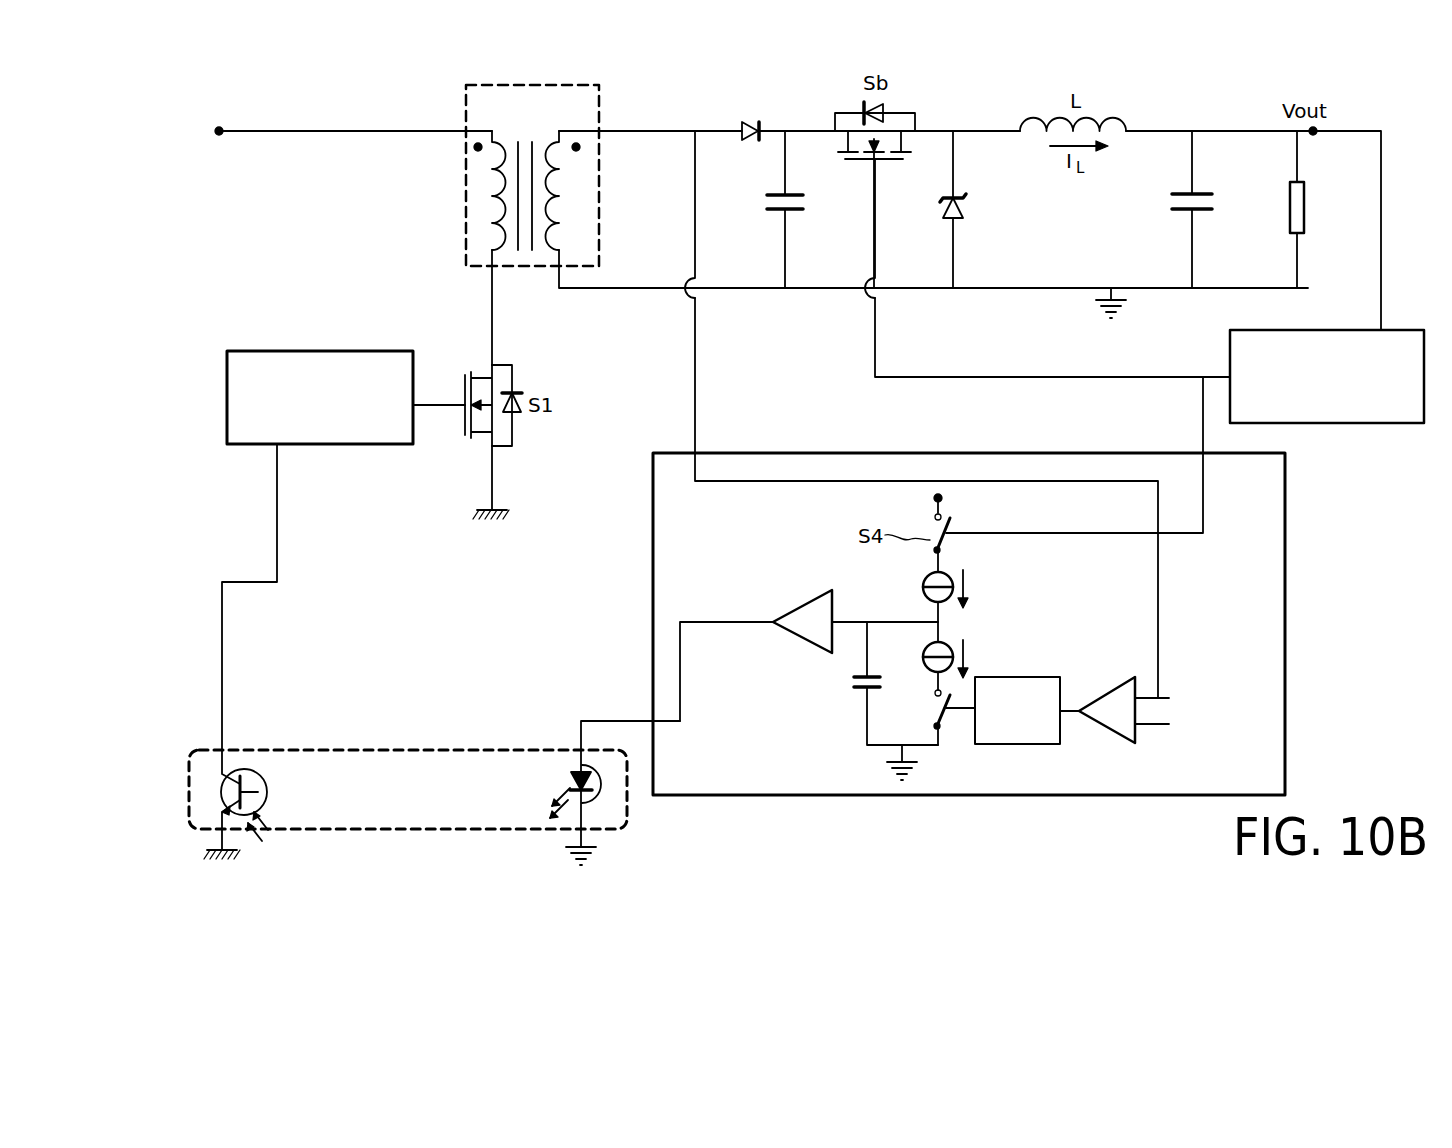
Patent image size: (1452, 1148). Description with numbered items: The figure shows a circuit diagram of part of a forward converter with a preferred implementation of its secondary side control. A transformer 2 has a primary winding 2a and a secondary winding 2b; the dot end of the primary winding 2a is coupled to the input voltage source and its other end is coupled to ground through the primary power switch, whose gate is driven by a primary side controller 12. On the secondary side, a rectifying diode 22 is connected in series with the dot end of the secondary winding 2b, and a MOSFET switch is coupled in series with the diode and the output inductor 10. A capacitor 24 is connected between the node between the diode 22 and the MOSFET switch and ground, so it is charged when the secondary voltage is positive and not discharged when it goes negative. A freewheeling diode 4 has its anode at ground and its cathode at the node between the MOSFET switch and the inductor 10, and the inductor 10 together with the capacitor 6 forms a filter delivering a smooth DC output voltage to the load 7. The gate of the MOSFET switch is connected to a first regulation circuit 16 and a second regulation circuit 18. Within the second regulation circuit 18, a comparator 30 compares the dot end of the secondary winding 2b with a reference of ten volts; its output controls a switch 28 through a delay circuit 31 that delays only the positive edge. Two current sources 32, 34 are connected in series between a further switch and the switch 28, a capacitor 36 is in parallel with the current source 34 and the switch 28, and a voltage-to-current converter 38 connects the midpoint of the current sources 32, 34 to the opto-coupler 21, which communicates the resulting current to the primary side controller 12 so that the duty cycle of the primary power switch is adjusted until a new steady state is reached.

The output inductor 10 is at (262, 135).
The transformer 2 is at (524, 217).
The primary winding 2a is at (505, 267).
The secondary winding 2b is at (547, 267).
The primary side controller 12 is at (341, 351).
The rectifying diode 22 is at (752, 121).
The capacitor 24 is at (802, 213).
The freewheeling diode 4 is at (970, 208).
The capacitor 6 is at (1180, 210).
The load 7 is at (1290, 200).
The first regulation circuit 16 is at (1370, 428).
The second regulation circuit 18 is at (653, 548).
The opto-coupler 21 is at (407, 750).
The voltage-to-current converter 38 is at (803, 605).
The current source 32 is at (923, 587).
The current source 34 is at (923, 657).
The capacitor 36 is at (855, 686).
The switch 28 is at (930, 715).
The delay circuit 31 is at (1017, 677).
The comparator 30 is at (1107, 690).